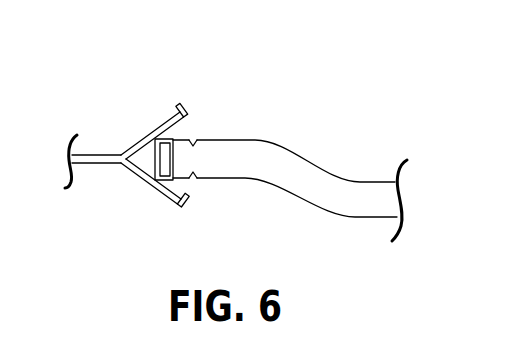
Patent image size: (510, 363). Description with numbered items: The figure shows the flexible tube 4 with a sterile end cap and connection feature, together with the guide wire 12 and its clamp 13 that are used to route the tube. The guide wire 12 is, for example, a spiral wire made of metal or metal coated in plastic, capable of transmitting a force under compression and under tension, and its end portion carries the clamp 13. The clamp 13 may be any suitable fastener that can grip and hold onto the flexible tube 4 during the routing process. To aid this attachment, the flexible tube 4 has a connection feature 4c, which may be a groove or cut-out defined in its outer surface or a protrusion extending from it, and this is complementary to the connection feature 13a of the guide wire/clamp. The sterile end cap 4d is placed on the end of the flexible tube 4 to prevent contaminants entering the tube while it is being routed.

The flexible tube 4 is at (313, 157).
The connection feature 4c is at (193, 143).
The sterile end cap 4d is at (155, 157).
The guide wire 12 is at (108, 155).
The clamp 13 is at (188, 112).
The connection feature 13a is at (188, 207).